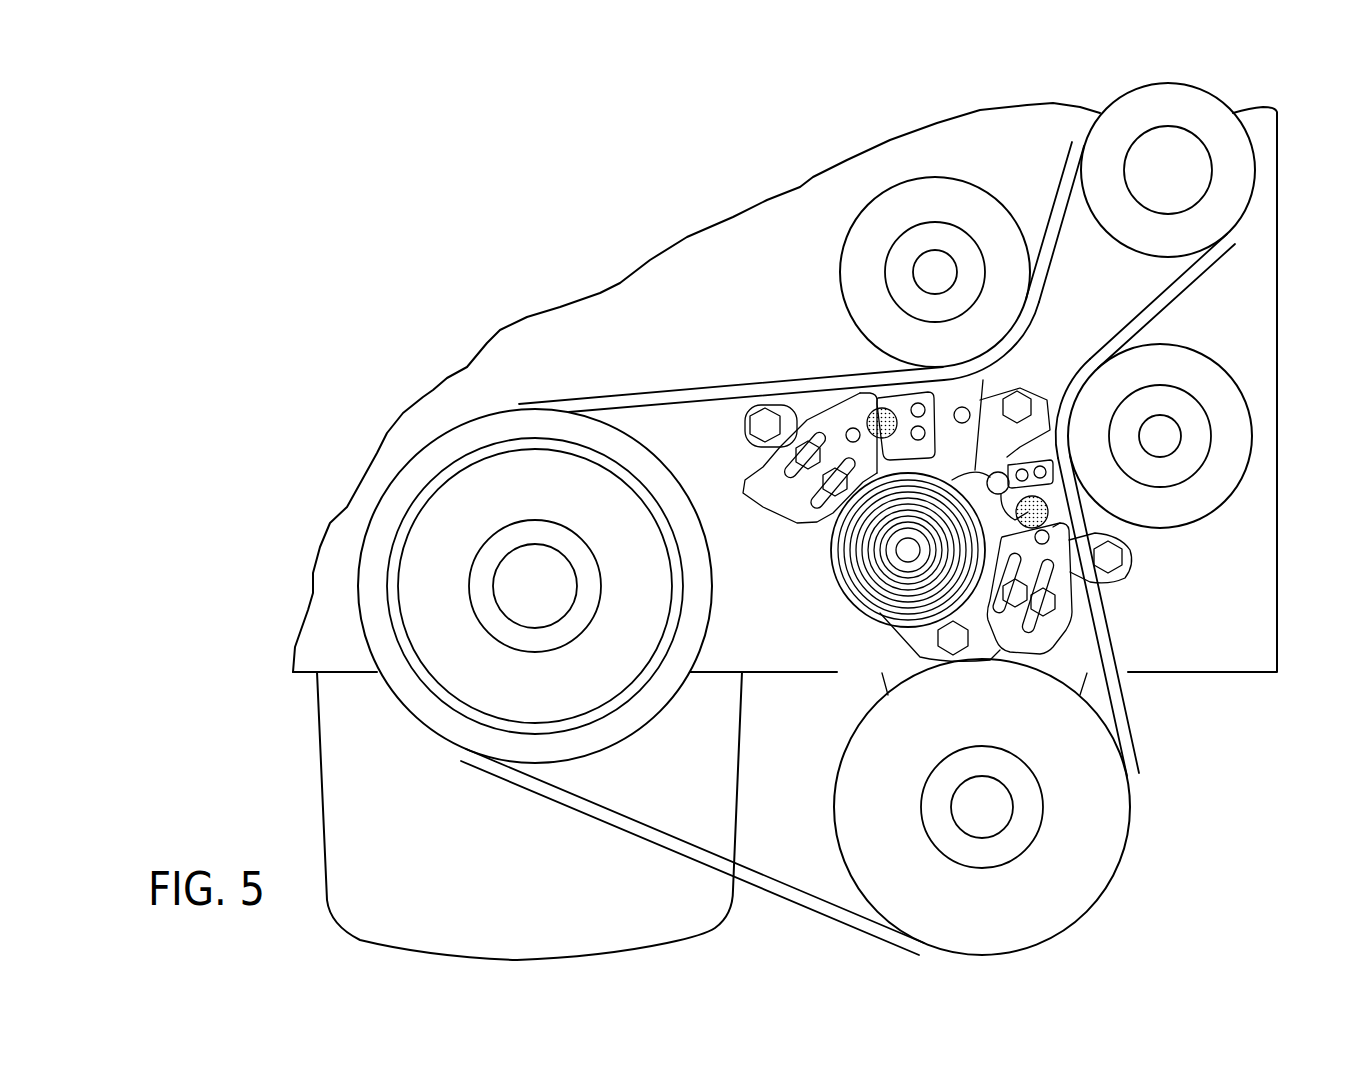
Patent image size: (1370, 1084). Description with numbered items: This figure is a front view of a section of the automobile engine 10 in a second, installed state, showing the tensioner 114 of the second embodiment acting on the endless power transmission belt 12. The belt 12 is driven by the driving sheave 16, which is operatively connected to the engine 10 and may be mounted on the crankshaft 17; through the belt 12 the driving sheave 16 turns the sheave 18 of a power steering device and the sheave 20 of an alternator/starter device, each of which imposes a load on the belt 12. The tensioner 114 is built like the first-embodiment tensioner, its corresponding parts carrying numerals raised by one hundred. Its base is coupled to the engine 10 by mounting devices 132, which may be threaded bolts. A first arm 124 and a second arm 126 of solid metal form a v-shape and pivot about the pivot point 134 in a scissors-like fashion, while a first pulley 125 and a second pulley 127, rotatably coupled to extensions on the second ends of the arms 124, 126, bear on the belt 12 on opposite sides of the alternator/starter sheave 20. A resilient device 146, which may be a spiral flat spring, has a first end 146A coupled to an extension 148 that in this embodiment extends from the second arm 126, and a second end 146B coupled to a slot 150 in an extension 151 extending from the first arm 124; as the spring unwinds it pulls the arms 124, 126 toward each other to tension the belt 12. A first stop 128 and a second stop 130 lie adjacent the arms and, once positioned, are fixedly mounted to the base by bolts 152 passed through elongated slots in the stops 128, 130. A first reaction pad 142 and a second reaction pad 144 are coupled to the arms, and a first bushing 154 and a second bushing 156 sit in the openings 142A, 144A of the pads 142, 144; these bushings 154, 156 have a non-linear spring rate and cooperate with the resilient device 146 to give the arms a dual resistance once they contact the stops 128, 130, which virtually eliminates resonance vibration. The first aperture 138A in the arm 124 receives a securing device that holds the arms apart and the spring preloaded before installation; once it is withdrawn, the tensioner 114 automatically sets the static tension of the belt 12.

The automobile engine 10 is at (290, 701).
The endless power transmission belt 12 is at (1113, 696).
The driving sheave 16 is at (360, 622).
The crankshaft 17 is at (470, 683).
The sheave of a power steering device 18 is at (1130, 807).
The sheave of an alternator/starter device 20 is at (1247, 175).
The tensioner 114 is at (800, 610).
The first arm 124 is at (872, 390).
The first pulley 125 is at (860, 232).
The second arm 126 is at (1112, 537).
The second pulley 127 is at (1247, 432).
The first stop 128 is at (858, 597).
The second stop 130 is at (993, 654).
The mounting devices 132 is at (747, 424).
The pivot point 134 is at (885, 555).
The first aperture 138A is at (985, 385).
The first reaction pad 142 is at (905, 400).
The opening of first reaction pad 142A is at (883, 407).
The second reaction pad 144 is at (1054, 470).
The opening of second reaction pad 144A is at (1053, 527).
The resilient device 146 is at (895, 620).
The first end of resilient device 146A is at (1015, 483).
The second end of resilient device 146B is at (857, 602).
The extension 148 is at (1001, 471).
The slot 150 is at (893, 567).
The extension 151 is at (896, 549).
The bolts 152 is at (827, 480).
The first bushing 154 is at (866, 393).
The second bushing 156 is at (1048, 508).